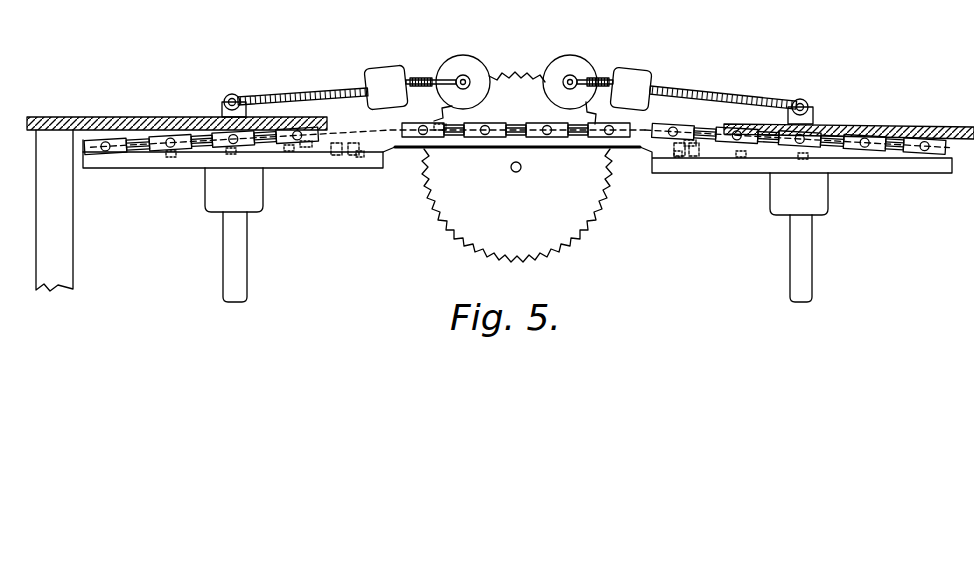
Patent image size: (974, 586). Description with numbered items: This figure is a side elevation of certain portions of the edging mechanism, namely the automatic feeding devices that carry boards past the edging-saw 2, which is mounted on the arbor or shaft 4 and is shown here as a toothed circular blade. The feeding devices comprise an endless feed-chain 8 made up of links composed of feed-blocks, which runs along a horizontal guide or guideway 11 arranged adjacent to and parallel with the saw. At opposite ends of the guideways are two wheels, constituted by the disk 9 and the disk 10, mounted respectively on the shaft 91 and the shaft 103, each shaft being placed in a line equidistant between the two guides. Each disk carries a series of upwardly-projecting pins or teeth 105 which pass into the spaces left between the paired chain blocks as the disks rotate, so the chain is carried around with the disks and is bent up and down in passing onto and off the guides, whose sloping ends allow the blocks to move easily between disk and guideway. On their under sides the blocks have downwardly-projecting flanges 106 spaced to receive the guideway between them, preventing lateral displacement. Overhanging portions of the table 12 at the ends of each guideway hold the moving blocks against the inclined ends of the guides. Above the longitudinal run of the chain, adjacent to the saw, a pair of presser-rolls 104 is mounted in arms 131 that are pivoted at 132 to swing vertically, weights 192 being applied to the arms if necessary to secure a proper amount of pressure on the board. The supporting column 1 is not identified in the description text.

The supporting column 1 is at (70, 222).
The edging-saw 2 is at (526, 69).
The arbor or shaft 4 is at (523, 167).
The endless feed-chain 8 is at (689, 126).
The disk 9 is at (351, 164).
The disk 10 is at (903, 177).
The guide or guideway 11 is at (652, 152).
The table 12 is at (88, 116).
The shaft 91 is at (250, 238).
The shaft 103 is at (806, 244).
The presser-roll 104 is at (447, 56).
The pin or tooth 105 is at (171, 155).
The flange 106 is at (308, 148).
The arm 131 is at (313, 90).
The pivot 132 is at (222, 105).
The weight 192 is at (375, 66).